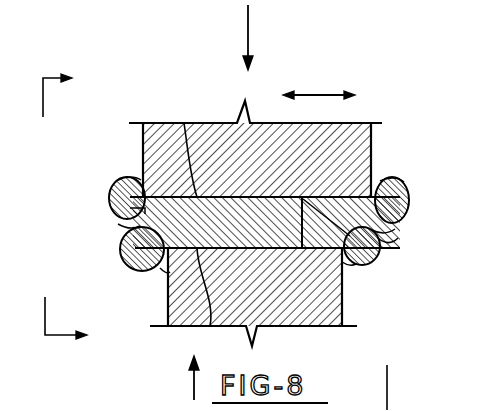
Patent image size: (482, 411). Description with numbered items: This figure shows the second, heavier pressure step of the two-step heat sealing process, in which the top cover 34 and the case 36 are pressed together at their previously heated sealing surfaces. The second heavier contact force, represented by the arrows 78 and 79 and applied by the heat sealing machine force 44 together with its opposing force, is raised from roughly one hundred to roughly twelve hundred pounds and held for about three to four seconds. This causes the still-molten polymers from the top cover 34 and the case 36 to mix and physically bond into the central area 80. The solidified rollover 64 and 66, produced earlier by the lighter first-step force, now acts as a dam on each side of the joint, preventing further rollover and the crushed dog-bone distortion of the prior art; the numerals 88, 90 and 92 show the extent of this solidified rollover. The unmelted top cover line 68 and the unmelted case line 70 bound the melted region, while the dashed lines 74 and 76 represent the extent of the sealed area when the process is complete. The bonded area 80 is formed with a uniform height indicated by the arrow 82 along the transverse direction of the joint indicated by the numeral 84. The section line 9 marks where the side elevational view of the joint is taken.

The section line 9— 9 is at (74, 208).
The top cover 34 is at (266, 178).
The case 36 is at (272, 304).
The heat sealing machine force 44 is at (390, 394).
The solidified rollover 64 is at (113, 183).
The solidified rollover 66 is at (123, 268).
The unmelted top cover line 68 is at (184, 123).
The unmelted case line 70 is at (210, 326).
The dashed line of sealed area extent 74 is at (110, 209).
The dashed line of sealed area extent 76 is at (392, 242).
The second heavier contact force 78 is at (248, 33).
The second heavier contact force 79 is at (194, 388).
The melted and bonded central area 80 is at (262, 235).
The uniform height arrow 82 is at (372, 196).
The transverse direction of the joint 84 is at (312, 95).
The extent of solidified rollover 88 is at (140, 179).
The extent of solidified rollover 90 is at (132, 228).
The extent of solidified rollover 92 is at (164, 270).